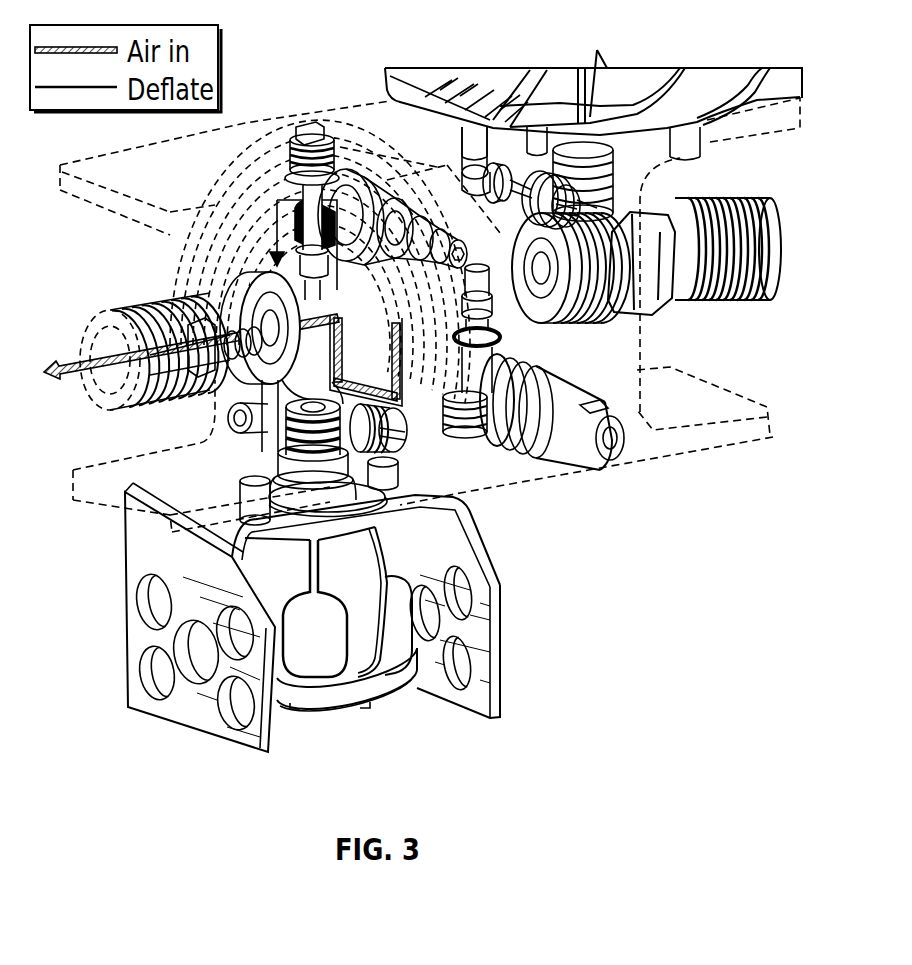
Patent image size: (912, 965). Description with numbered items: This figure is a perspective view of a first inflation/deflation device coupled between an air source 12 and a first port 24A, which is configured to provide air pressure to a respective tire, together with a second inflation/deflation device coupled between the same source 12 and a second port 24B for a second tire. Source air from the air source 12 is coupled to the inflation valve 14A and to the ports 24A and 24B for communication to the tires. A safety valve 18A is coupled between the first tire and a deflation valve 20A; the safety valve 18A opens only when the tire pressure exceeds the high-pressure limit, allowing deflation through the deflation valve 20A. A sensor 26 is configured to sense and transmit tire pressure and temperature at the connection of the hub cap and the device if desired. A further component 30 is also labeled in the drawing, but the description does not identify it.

The air source 12 is at (405, 305).
The inflation valve 14A is at (400, 420).
The safety valve 18A is at (366, 188).
The deflation valve 20A is at (300, 240).
The first port 24A is at (127, 307).
The second port 24B is at (737, 303).
The sensor 26 is at (380, 686).
The inflatable pad 30 is at (637, 82).